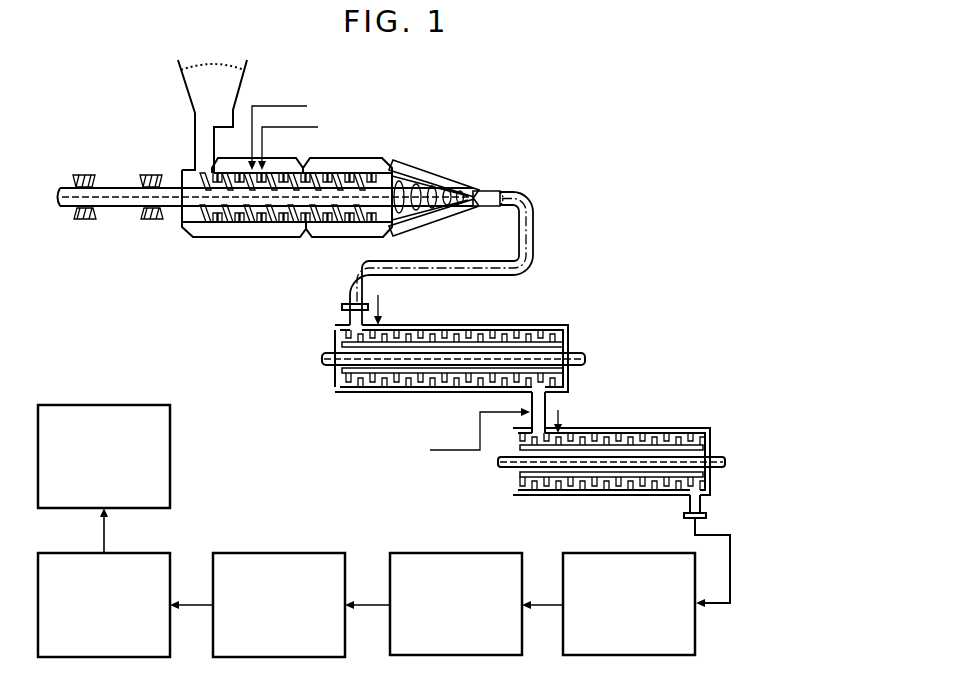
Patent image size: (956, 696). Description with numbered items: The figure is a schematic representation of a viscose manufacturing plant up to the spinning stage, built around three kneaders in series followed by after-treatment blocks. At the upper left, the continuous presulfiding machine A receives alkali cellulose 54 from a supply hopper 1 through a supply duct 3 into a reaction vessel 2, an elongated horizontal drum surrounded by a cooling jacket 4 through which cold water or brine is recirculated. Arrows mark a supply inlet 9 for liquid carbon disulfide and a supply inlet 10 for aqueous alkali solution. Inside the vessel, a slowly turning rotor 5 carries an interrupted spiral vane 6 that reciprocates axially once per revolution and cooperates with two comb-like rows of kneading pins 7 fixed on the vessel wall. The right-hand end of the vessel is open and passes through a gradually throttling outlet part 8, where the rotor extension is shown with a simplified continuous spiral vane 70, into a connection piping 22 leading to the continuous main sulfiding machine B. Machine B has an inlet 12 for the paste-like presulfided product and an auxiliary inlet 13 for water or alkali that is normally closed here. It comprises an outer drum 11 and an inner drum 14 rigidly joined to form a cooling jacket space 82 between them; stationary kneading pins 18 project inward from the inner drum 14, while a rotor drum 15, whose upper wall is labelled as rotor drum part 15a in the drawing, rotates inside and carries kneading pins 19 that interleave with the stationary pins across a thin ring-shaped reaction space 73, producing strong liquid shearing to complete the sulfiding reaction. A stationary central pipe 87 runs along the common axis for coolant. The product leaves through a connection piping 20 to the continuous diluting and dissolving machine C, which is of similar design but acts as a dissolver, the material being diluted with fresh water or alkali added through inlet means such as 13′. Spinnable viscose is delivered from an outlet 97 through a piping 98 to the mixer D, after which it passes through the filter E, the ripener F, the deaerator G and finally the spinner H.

The supply hopper 1 is at (247, 66).
The alkali cellulose 54 is at (214, 66).
The supply duct 3 is at (195, 140).
The supply inlet for aqueous alkali solution 10 is at (288, 106).
The supply inlet for liquid carbon disulfide 9 is at (290, 127).
The reaction vessel 2 is at (323, 158).
The interrupted spiral vane 6 is at (294, 218).
The kneading pins 7 is at (222, 222).
The rotor 5 is at (178, 196).
The outlet part 8 is at (433, 180).
The jacket 4 is at (465, 182).
The continuous spiral vane 70 is at (402, 180).
The connection piping 22 is at (530, 200).
The inlet 12 is at (342, 307).
The auxiliary inlet 13 is at (380, 302).
The cooling jacket space 82 is at (550, 325).
The kneading pins 19 is at (432, 335).
The kneading pins 18 is at (500, 334).
The inner tube 15a is at (342, 350).
The rotor drum 15 is at (342, 372).
The stationary central pipe 87 is at (585, 359).
The ring-shaped working or reaction space 73 is at (353, 392).
The inner drum 14 is at (452, 388).
The outer drum 11 is at (407, 393).
The connection piping 20 is at (549, 405).
The inlet means 13′ is at (440, 450).
The continuous diluting and dissolving machine C is at (660, 425).
The outlet 97 is at (704, 517).
The piping 98 is at (731, 575).
The continuous presulfiding machine A is at (363, 155).
The continuous main sulfiding machine B is at (460, 322).
The spinning apparatus H is at (171, 459).
The deaeration apparatus G is at (148, 553).
The ripening apparatus F is at (302, 553).
The filtering apparatus E is at (478, 553).
The mixer D is at (637, 553).